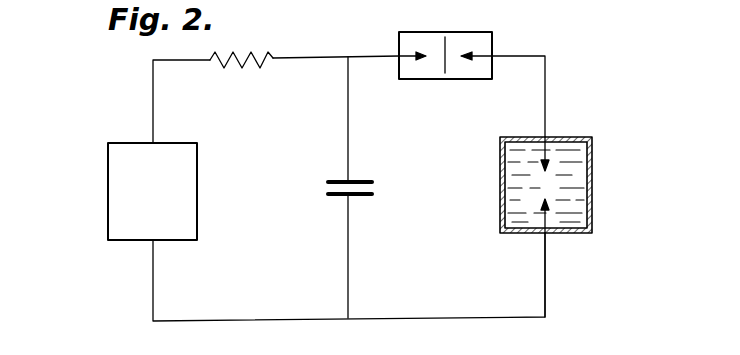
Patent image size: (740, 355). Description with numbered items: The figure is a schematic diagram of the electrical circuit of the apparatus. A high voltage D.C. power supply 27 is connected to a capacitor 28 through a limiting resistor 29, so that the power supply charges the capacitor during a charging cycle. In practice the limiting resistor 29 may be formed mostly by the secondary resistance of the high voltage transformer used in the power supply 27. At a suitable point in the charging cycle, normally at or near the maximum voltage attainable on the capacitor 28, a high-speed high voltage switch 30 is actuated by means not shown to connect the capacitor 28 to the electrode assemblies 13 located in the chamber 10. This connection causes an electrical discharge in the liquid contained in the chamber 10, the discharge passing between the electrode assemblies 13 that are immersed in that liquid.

The chamber 10 is at (592, 182).
The electrode assemblies 13 is at (546, 172).
The high voltage D.C. power supply 27 is at (188, 208).
The capacitor 28 is at (374, 187).
The limiting resistor 29 is at (264, 51).
The high-speed high voltage switch 30 is at (442, 31).